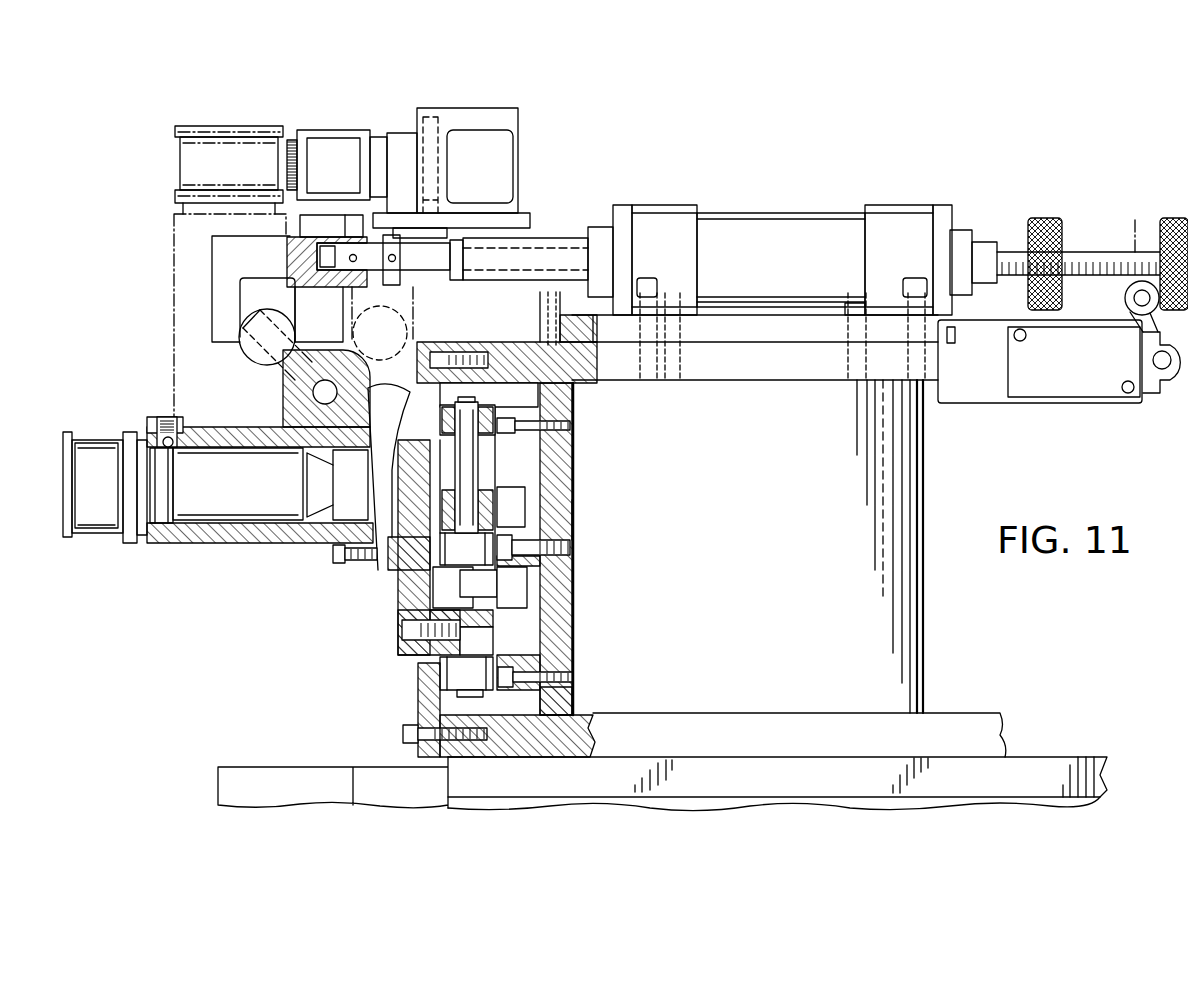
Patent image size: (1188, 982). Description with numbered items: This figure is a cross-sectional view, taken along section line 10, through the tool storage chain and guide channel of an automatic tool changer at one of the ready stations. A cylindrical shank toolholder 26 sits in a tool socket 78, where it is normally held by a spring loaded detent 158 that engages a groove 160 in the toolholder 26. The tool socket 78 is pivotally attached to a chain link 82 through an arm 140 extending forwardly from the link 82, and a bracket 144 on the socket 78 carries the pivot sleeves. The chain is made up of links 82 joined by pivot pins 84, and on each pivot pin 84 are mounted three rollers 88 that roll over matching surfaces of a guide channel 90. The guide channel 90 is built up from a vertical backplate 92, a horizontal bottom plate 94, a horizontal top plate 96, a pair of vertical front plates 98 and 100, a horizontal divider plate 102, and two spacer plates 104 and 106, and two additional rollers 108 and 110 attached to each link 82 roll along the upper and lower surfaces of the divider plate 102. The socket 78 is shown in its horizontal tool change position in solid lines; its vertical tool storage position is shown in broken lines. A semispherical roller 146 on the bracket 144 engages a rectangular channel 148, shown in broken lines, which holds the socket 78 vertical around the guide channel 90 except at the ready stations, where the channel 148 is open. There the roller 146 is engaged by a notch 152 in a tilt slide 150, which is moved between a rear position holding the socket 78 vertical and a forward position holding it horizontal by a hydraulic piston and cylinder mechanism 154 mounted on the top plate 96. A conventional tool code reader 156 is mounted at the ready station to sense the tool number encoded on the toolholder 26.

The section line 10- 10 is at (306, 80).
The toolholder 26 is at (92, 540).
The tool socket 78 is at (210, 543).
The link 82 is at (407, 592).
The pivot pin 84 is at (467, 473).
The roller 88 is at (440, 430).
The guide channel 90 is at (577, 590).
The vertical backplate 92 is at (577, 518).
The horizontal bottom plate 94 is at (527, 737).
The horizontal top plate 96 is at (512, 352).
The vertical front plate 98 is at (417, 398).
The vertical front plate 100 is at (418, 687).
The horizontal divider plate 102 is at (578, 560).
The spacer plate 104 is at (527, 657).
The spacer plate 106 is at (573, 393).
The roller 108 is at (513, 503).
The roller 110 is at (510, 605).
The arm 140 is at (390, 448).
The bracket 144 is at (287, 403).
The semispherical roller 146 is at (253, 355).
The rectangular channel 148 is at (347, 324).
The tilt slide 150 is at (225, 253).
The notch 152 is at (245, 290).
The hydraulic piston and cylinder mechanism 154 is at (780, 217).
The tool code reader 156 is at (325, 153).
The spring loaded detent 158 is at (168, 417).
The groove 160 is at (168, 490).